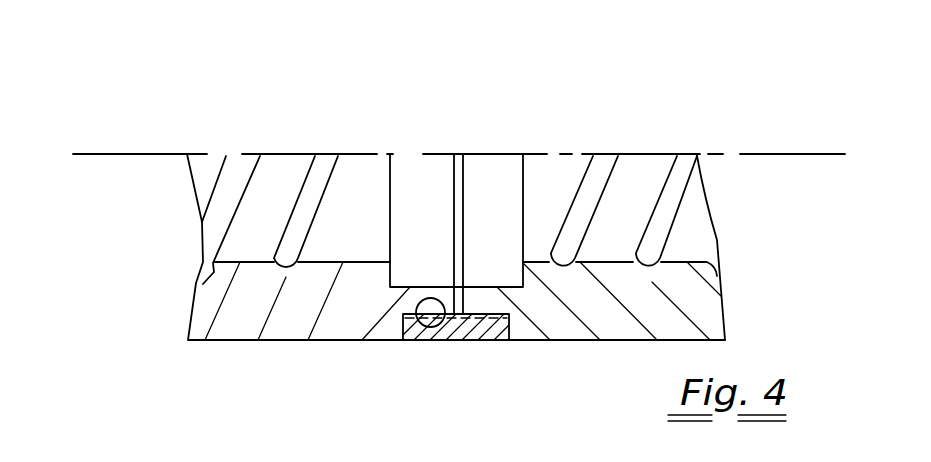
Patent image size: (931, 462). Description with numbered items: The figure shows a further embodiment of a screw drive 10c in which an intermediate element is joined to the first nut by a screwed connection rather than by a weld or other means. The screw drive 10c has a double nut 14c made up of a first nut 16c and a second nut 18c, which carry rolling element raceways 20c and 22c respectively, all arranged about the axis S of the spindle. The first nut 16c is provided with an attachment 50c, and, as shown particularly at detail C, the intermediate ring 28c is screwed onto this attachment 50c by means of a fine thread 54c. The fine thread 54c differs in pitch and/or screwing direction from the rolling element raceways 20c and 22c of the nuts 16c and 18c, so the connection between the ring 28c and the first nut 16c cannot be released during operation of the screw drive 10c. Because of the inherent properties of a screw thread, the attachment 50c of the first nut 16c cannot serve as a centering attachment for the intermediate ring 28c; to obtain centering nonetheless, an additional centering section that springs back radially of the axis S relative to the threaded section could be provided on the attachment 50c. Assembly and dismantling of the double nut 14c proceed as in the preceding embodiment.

The screw drive 10c is at (133, 95).
The axis of the spindle S is at (125, 160).
The rolling element raceway 20c is at (232, 173).
The first nut 16c is at (233, 333).
The rolling element raceway 22c is at (601, 167).
The double nut 14c is at (715, 121).
The second nut 18c is at (707, 310).
The attachment 50c is at (415, 295).
The fine thread 54c is at (425, 297).
The detail C is at (442, 336).
The intermediate ring 28c is at (488, 341).